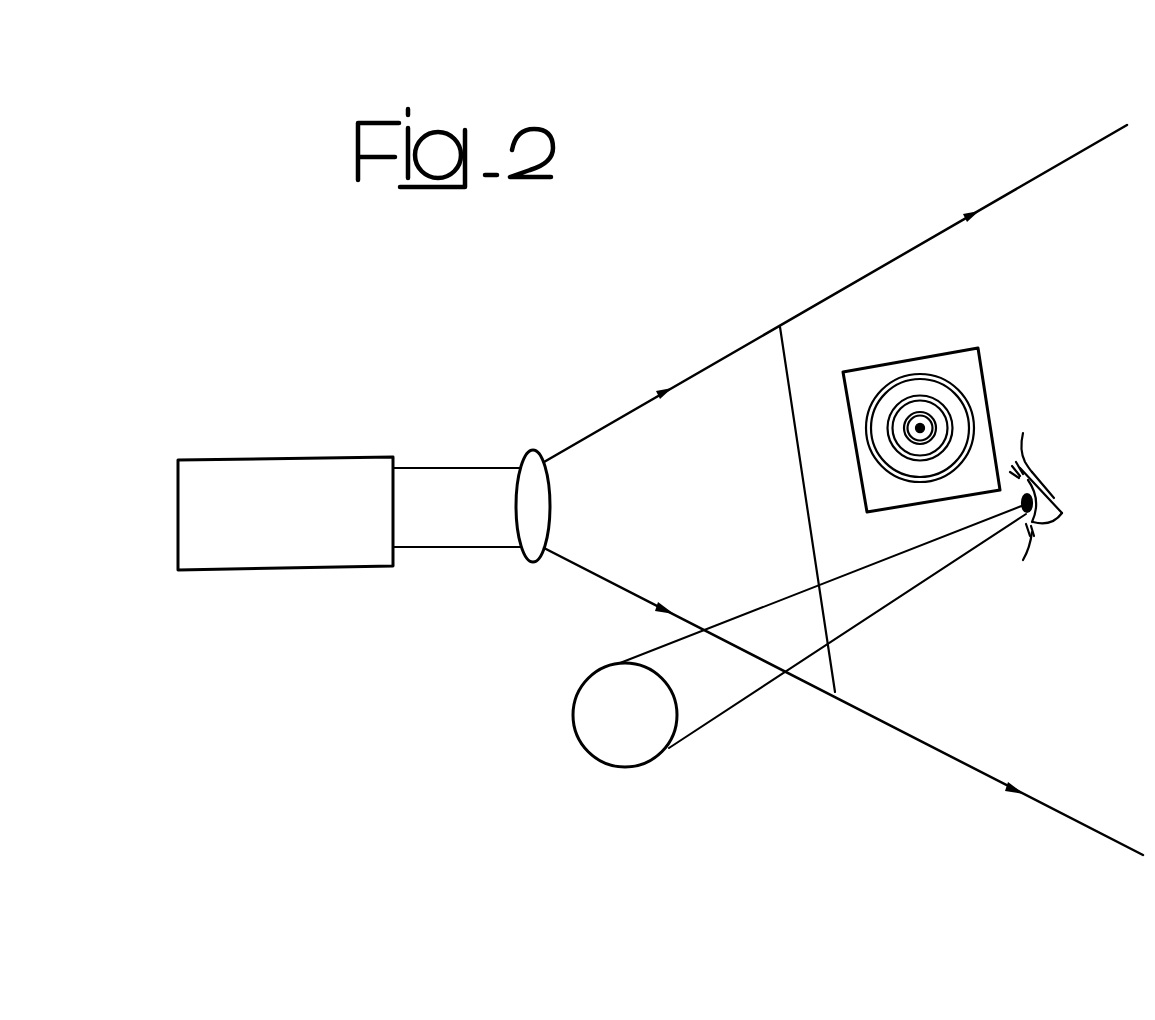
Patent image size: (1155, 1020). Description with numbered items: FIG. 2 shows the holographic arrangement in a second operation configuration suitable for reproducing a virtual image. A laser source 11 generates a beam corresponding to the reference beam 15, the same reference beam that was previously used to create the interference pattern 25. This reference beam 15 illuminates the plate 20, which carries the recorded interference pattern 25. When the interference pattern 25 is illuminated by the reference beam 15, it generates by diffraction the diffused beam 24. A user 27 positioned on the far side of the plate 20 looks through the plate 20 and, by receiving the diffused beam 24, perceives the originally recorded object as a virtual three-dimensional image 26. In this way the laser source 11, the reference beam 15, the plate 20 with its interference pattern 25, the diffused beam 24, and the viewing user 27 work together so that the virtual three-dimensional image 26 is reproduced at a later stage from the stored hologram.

The laser source 11 is at (240, 460).
The reference beam 15 is at (462, 467).
The plate 20 is at (778, 386).
The diffused beam 24 is at (1070, 158).
The interference pattern 25 is at (804, 417).
The virtual three-dimensional image 26 is at (645, 757).
The user 27 is at (1058, 489).